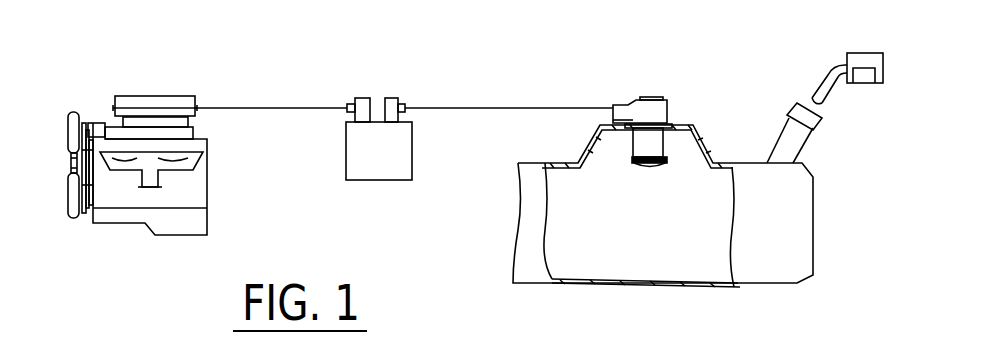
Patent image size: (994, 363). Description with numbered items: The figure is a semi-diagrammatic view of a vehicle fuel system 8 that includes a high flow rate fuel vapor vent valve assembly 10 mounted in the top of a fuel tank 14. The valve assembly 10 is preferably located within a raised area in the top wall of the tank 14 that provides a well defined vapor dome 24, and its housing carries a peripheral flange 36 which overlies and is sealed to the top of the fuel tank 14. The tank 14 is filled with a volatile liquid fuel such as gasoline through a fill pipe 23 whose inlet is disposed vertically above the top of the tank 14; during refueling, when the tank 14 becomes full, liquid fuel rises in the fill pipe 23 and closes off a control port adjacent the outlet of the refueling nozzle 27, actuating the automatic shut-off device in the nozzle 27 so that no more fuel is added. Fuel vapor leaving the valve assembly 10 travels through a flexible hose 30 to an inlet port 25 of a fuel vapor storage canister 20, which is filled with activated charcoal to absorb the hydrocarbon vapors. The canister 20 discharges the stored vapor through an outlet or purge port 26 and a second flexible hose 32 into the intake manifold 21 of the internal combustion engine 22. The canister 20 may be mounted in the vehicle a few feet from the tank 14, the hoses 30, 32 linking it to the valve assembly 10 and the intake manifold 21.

The vehicle fuel system 8 is at (465, 92).
The fuel vapor vent valve assembly 10 is at (663, 100).
The fuel tank 14 is at (792, 212).
The fuel vapor storage canister 20 is at (395, 176).
The intake manifold 21 is at (183, 101).
The internal combustion engine 22 is at (193, 172).
The fill pipe 23 is at (793, 138).
The vapor dome 24 is at (692, 143).
The inlet port 25 is at (392, 97).
The purge port 26 is at (357, 97).
The refueling nozzle 27 is at (833, 62).
The flexible hose 30 is at (513, 108).
The flexible hose 32 is at (258, 108).
The peripheral flange 36 is at (672, 120).